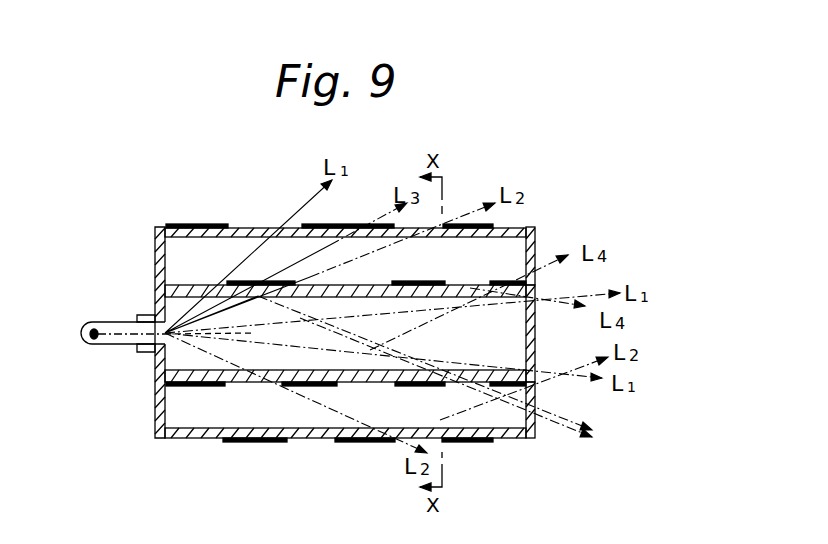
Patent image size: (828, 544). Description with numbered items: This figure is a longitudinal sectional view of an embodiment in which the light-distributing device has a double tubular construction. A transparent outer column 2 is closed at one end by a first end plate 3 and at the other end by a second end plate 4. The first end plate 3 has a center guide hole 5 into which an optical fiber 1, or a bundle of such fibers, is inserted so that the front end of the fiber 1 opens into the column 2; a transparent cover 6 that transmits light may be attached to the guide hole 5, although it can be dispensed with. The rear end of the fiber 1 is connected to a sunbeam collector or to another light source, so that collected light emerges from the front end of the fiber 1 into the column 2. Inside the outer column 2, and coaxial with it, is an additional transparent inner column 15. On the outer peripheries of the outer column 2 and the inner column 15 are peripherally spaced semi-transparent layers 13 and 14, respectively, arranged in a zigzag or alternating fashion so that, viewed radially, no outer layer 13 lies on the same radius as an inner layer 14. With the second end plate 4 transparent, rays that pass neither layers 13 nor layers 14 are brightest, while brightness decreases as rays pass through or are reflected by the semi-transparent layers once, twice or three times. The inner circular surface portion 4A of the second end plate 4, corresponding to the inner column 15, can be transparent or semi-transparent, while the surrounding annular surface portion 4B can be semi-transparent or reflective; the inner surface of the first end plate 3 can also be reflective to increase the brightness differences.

The optical fiber 1 is at (112, 322).
The column 2 is at (263, 228).
The first end plate 3 is at (155, 270).
The second end plate 4 is at (524, 325).
The inner circular surface portion 4A is at (527, 334).
The annular shaped inner surface portion 4B is at (527, 257).
The center guide hole 5 is at (138, 342).
The transparent cover 6 is at (218, 334).
The outer semi-transparent layers 13 is at (199, 224).
The inner semi-transparent layers 14 is at (285, 283).
The inner column 15 is at (376, 370).